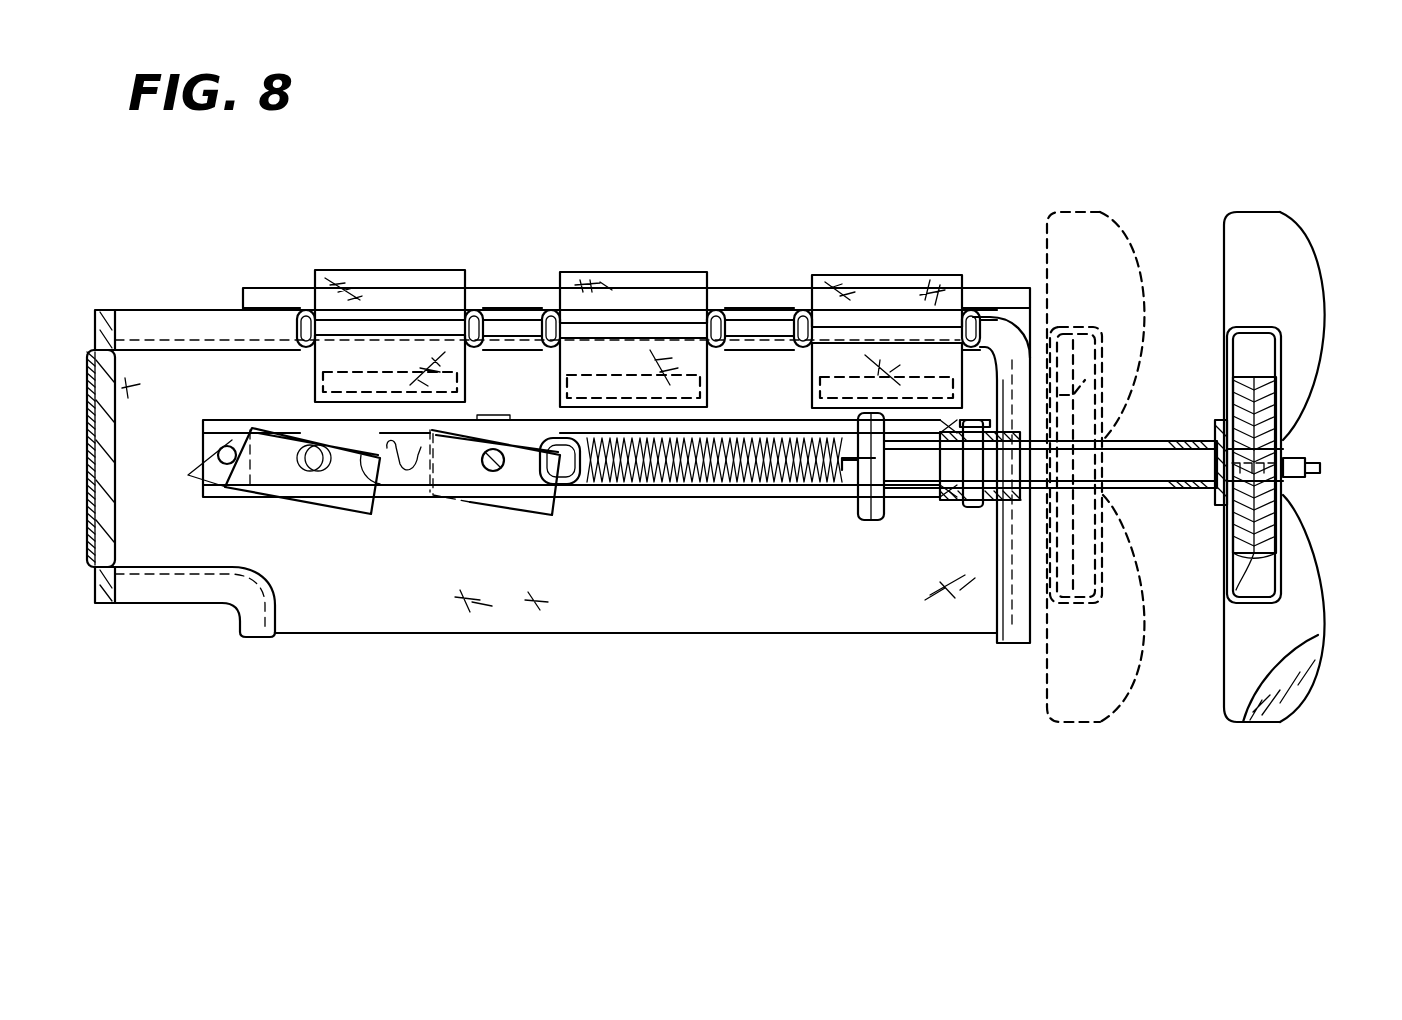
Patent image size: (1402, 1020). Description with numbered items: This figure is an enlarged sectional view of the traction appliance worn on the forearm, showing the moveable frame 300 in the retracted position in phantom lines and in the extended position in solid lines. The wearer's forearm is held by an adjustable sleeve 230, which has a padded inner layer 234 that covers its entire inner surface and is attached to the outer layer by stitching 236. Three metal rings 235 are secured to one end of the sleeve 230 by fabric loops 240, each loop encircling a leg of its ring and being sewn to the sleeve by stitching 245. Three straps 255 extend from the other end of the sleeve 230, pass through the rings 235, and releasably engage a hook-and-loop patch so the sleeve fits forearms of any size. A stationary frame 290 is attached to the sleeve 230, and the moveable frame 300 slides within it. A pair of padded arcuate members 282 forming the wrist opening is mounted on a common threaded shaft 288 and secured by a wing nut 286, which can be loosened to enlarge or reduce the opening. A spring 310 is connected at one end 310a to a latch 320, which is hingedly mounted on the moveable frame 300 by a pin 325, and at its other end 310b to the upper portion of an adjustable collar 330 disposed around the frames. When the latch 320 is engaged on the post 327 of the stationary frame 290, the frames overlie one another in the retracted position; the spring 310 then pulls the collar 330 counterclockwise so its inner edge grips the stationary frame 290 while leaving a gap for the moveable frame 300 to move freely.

The adjustable sleeve 230 is at (788, 625).
The padded inner layer 234 is at (146, 592).
The metal rings 235 is at (538, 327).
The stitching 236 is at (280, 612).
The fabric loops 240 is at (452, 357).
The stitching 245 is at (315, 378).
The straps 255 is at (373, 280).
The arcuate members 282 is at (1078, 223).
The wing nut 286 is at (1290, 455).
The threaded shaft 288 is at (1283, 495).
The stationary frame 290 is at (712, 510).
The moveable frame 300 is at (1142, 436).
The spring 310 is at (708, 518).
The spring first end 310a is at (560, 482).
The spring second end 310b is at (857, 513).
The latch 320 is at (530, 507).
The pin 325 is at (482, 470).
The post 327 is at (228, 466).
The adjustable collar 330 is at (867, 520).